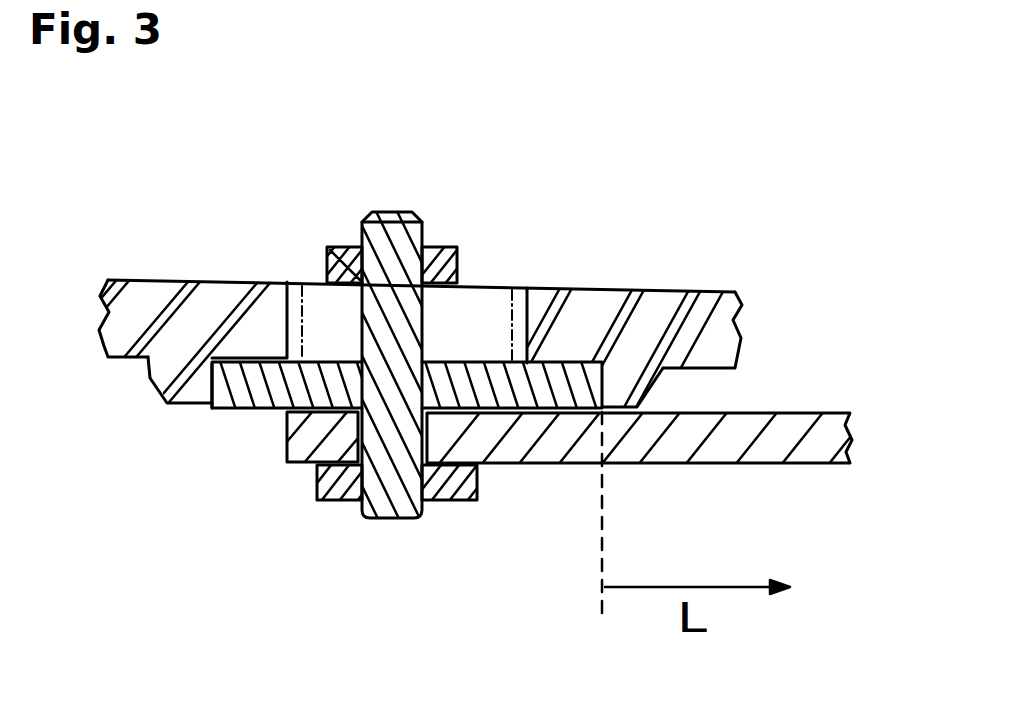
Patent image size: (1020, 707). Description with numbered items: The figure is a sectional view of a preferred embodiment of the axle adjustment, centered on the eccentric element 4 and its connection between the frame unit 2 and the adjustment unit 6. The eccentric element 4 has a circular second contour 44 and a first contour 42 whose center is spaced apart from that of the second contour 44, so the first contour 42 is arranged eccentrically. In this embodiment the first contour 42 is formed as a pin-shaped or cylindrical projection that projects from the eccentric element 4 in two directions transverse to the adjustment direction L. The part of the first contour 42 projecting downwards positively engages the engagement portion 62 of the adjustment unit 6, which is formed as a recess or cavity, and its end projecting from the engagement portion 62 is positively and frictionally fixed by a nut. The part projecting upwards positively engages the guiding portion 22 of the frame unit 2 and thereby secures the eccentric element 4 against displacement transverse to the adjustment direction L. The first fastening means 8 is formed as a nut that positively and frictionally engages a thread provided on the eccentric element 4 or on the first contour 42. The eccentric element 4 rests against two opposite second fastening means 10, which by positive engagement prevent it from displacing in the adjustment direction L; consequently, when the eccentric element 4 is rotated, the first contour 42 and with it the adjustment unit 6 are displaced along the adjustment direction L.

The frame unit 2 is at (727, 293).
The guiding portion 22 is at (500, 328).
The eccentric element 4 is at (265, 408).
The second contour 44 is at (212, 408).
The first contour 42 is at (405, 342).
The first fastening means 8 is at (330, 249).
The adjustment unit 6 is at (807, 452).
The engagement portion 62 is at (434, 463).
The second fastening means 10 is at (620, 384).